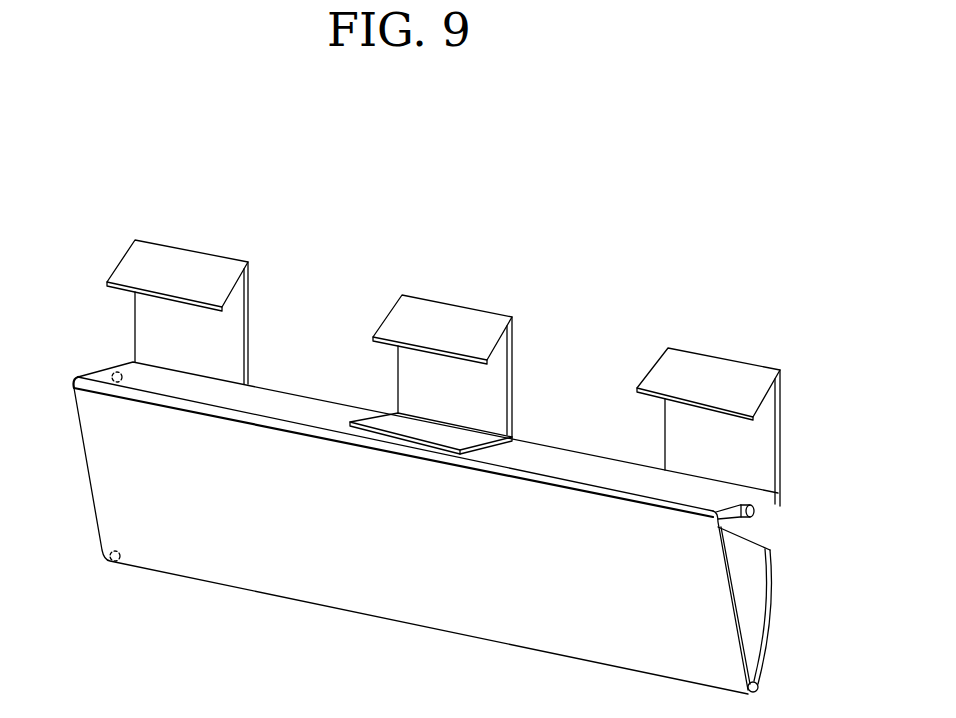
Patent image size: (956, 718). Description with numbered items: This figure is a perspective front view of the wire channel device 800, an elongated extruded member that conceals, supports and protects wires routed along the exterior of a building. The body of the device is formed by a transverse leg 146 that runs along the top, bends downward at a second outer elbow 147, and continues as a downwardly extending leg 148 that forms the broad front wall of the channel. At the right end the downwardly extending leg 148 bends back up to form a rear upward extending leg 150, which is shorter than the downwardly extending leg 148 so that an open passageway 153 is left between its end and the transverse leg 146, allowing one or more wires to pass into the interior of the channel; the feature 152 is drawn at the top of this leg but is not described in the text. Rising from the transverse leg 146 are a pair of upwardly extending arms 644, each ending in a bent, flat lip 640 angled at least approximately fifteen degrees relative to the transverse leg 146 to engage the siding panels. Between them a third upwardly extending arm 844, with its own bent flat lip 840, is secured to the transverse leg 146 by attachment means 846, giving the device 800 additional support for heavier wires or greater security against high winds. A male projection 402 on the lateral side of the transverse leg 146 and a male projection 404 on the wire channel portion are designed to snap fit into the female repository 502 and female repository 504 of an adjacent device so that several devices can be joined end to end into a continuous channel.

The wire channel device 800 is at (259, 150).
The transverse leg 146 is at (261, 403).
The second outer elbow 147 is at (278, 427).
The downwardly extending leg 148 is at (350, 577).
The female repository 502 is at (113, 372).
The female repository 504 is at (106, 556).
The flat lip 640 is at (132, 267).
The upwardly extending arm 644 is at (253, 298).
The flat lip 840 is at (430, 320).
The third upwardly extending arm 844 is at (513, 370).
The attachment means 846 is at (468, 437).
The male projection 402 is at (757, 509).
The male projection 404 is at (760, 684).
The rear upward extending leg 150 is at (773, 623).
The hinge leaf 152 is at (770, 548).
The open passageway 153 is at (755, 532).